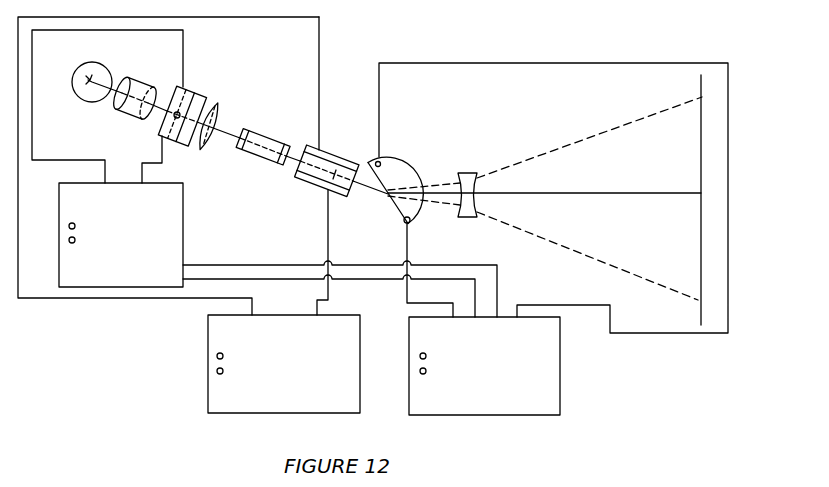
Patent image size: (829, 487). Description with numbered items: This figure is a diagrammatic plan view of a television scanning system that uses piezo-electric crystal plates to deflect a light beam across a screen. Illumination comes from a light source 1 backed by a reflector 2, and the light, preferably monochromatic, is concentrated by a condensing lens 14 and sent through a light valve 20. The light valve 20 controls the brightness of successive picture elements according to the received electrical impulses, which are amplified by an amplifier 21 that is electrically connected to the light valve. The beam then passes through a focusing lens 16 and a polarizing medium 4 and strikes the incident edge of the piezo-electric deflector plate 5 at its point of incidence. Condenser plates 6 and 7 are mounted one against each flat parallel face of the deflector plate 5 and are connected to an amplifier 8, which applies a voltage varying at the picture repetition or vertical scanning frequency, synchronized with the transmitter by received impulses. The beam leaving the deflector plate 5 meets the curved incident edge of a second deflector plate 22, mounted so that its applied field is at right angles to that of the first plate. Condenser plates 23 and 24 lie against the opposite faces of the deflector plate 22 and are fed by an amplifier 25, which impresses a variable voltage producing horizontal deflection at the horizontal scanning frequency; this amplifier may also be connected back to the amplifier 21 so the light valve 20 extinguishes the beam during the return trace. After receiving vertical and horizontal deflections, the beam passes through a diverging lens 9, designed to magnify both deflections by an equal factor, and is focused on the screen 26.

The light source 1 is at (107, 46).
The reflector 2 is at (48, 93).
The condensing lens 14 is at (163, 87).
The light valve 20 is at (206, 88).
The focusing lens 16 is at (222, 118).
The polarizing medium 4 is at (291, 126).
The condenser plate 6 is at (323, 147).
The condenser plate 7 is at (324, 193).
The piezo-electric deflector plate 5 is at (358, 189).
The condenser plate 23 is at (396, 166).
The deflector plate 22 is at (427, 180).
The condenser plate 24 is at (414, 223).
The diverging lens 9 is at (486, 159).
The screen 26 is at (698, 182).
The amplifier 21 is at (121, 235).
The amplifier 8 is at (284, 364).
The amplifier 25 is at (484, 366).